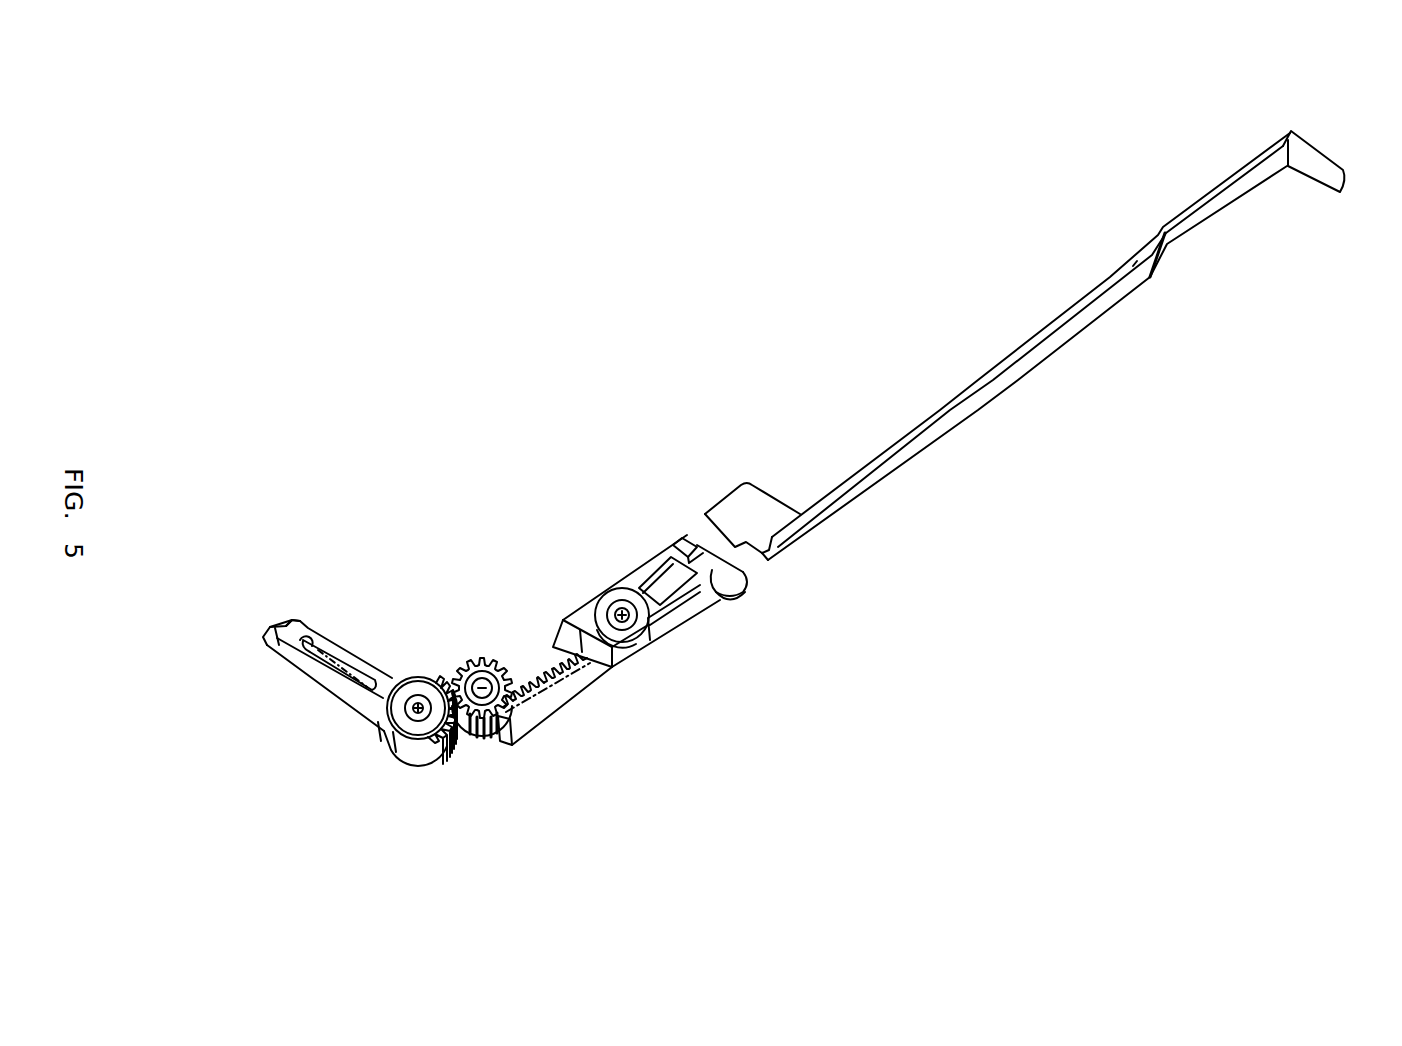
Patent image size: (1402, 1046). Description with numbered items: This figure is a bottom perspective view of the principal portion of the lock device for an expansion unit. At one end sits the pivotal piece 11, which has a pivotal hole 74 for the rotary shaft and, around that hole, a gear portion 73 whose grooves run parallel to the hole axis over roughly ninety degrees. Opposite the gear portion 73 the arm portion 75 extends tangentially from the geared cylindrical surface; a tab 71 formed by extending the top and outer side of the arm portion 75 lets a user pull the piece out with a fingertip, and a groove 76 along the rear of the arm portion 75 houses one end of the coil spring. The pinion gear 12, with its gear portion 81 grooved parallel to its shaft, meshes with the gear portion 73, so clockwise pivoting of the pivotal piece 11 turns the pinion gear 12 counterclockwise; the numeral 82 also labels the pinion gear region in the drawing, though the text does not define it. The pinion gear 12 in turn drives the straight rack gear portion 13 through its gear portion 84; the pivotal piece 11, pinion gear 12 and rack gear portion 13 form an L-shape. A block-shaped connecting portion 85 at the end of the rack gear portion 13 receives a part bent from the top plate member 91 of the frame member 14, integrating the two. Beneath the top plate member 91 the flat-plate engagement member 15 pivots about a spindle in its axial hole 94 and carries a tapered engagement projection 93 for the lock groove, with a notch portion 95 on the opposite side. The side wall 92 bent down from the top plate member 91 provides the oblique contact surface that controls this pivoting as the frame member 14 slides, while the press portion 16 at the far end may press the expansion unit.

The pivotal piece 11 is at (297, 663).
The pinion gear 12 is at (487, 740).
The rack gear portion 13 is at (580, 690).
The frame member 14 is at (1000, 394).
The engagement member 15 is at (632, 588).
The press portion 16 is at (1309, 153).
The tab 71 is at (272, 620).
The gear portion 73 is at (440, 757).
The pivotal hole 74 is at (418, 712).
The arm portion 75 is at (316, 682).
The groove 76 is at (357, 668).
The gear portion 81 is at (480, 745).
The pinion gear 82 is at (477, 667).
The gear portion 84 is at (532, 672).
The connecting portion 85 is at (570, 620).
The top plate member 91 is at (767, 508).
The side wall 92 is at (678, 620).
The engagement projection 93 is at (737, 600).
The axial hole 94 is at (620, 614).
The notch portion 95 is at (703, 550).